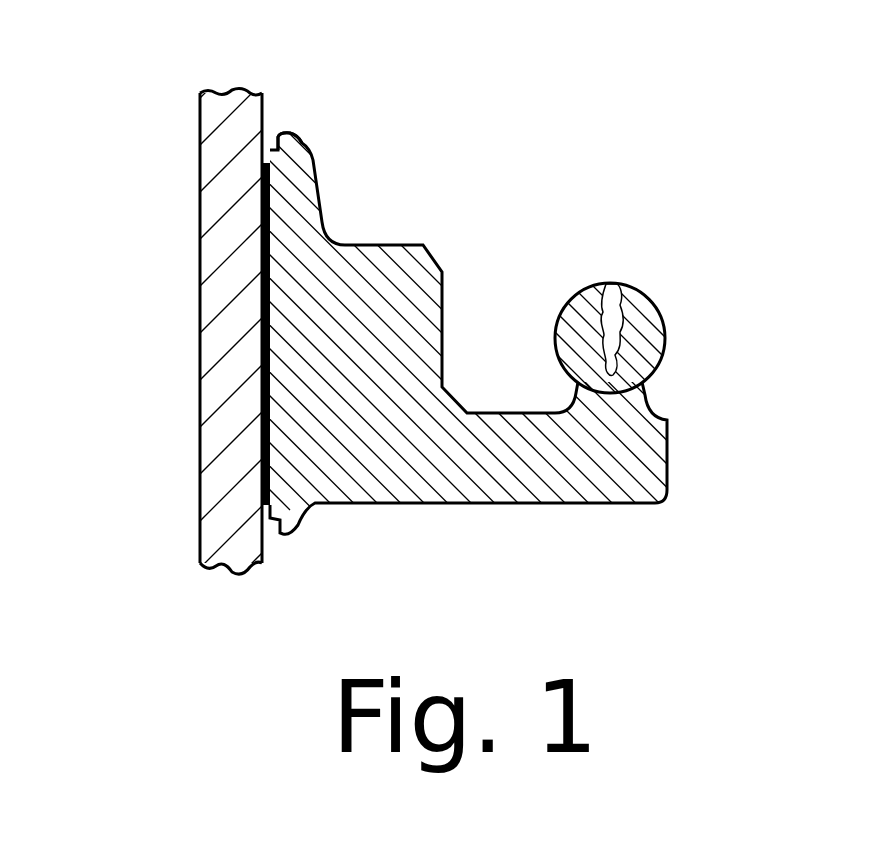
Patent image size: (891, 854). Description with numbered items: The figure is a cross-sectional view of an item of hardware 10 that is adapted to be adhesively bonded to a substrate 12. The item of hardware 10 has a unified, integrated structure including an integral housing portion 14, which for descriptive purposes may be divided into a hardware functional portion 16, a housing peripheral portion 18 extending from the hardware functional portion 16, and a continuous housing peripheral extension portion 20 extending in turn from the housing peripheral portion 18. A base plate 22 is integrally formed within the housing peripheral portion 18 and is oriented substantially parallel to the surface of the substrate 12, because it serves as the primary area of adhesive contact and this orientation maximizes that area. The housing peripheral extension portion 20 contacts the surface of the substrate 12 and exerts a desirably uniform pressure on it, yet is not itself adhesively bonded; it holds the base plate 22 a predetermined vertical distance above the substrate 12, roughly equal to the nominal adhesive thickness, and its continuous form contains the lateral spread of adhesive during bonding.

The item of hardware 10 is at (620, 150).
The substrate 12 is at (198, 202).
The integral housing portion 14 is at (383, 253).
The hardware functional portion 16 is at (663, 317).
The housing peripheral portion 18 is at (302, 143).
The housing peripheral extension portion 20 is at (268, 163).
The base plate 22 is at (262, 297).